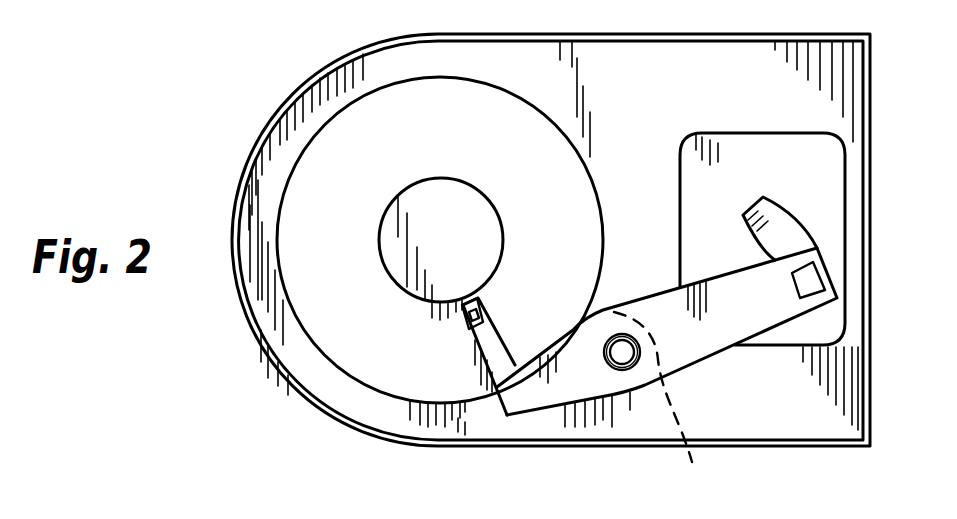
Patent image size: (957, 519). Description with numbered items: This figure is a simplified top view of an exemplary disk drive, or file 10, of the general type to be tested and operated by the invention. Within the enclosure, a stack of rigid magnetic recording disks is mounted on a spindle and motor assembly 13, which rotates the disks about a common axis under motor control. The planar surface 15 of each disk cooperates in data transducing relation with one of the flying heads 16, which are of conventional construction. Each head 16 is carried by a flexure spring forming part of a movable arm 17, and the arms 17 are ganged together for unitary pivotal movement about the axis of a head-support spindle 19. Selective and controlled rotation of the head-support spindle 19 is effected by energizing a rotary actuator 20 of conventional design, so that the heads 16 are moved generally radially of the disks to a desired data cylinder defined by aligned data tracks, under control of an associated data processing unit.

The disk drive 10 is at (224, 357).
The spindle and motor assembly 13 is at (398, 200).
The planar surface 15 is at (410, 107).
The flying head 16 is at (467, 323).
The movable arm 17 is at (505, 405).
The head-support spindle 19 is at (667, 397).
The rotary actuator 20 is at (788, 333).